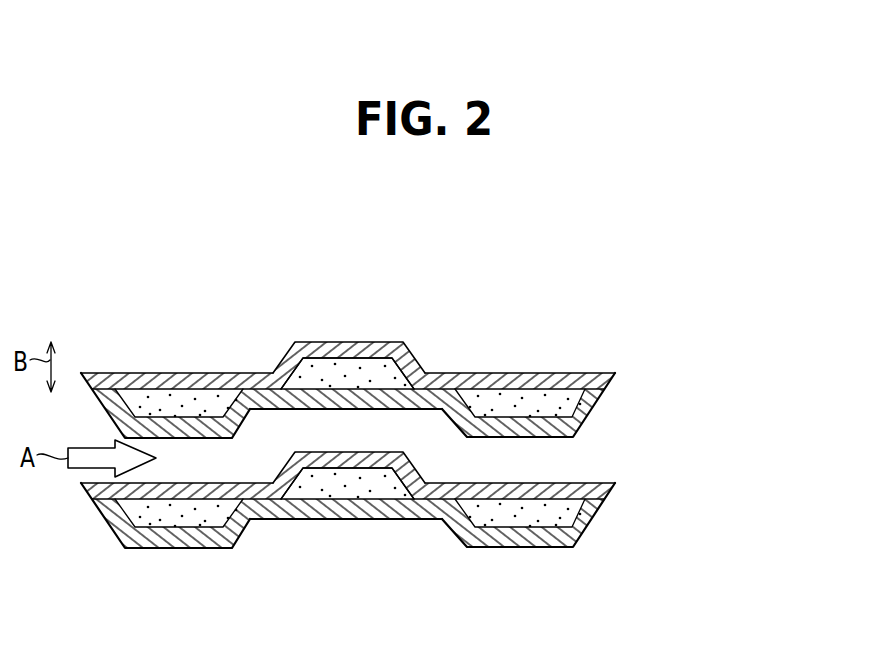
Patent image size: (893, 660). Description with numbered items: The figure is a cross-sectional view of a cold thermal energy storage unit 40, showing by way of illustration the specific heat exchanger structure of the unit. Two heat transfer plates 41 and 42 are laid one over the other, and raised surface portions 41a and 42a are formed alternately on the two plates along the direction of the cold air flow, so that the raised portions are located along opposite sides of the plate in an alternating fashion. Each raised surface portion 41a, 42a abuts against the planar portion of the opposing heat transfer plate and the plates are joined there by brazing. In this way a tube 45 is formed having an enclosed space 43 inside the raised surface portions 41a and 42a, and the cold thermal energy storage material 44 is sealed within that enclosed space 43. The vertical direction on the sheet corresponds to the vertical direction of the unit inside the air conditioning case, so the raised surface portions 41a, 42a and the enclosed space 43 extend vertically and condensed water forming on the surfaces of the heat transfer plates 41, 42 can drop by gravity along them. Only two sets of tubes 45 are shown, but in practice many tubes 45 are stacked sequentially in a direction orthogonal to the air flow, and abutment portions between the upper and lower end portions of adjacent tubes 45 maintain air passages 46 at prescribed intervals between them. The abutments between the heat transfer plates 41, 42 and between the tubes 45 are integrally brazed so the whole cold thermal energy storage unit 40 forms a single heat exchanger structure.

The cold thermal energy storage unit 40 is at (431, 443).
The heat transfer plate 41 is at (348, 395).
The raised surface portion 41a is at (385, 345).
The heat transfer plate 42 is at (348, 502).
The raised surface portion 42a is at (187, 439).
The enclosed space 43 is at (377, 443).
The cold thermal energy storage material 44 is at (330, 373).
The tube 45 is at (400, 443).
The air passage 46 is at (260, 458).